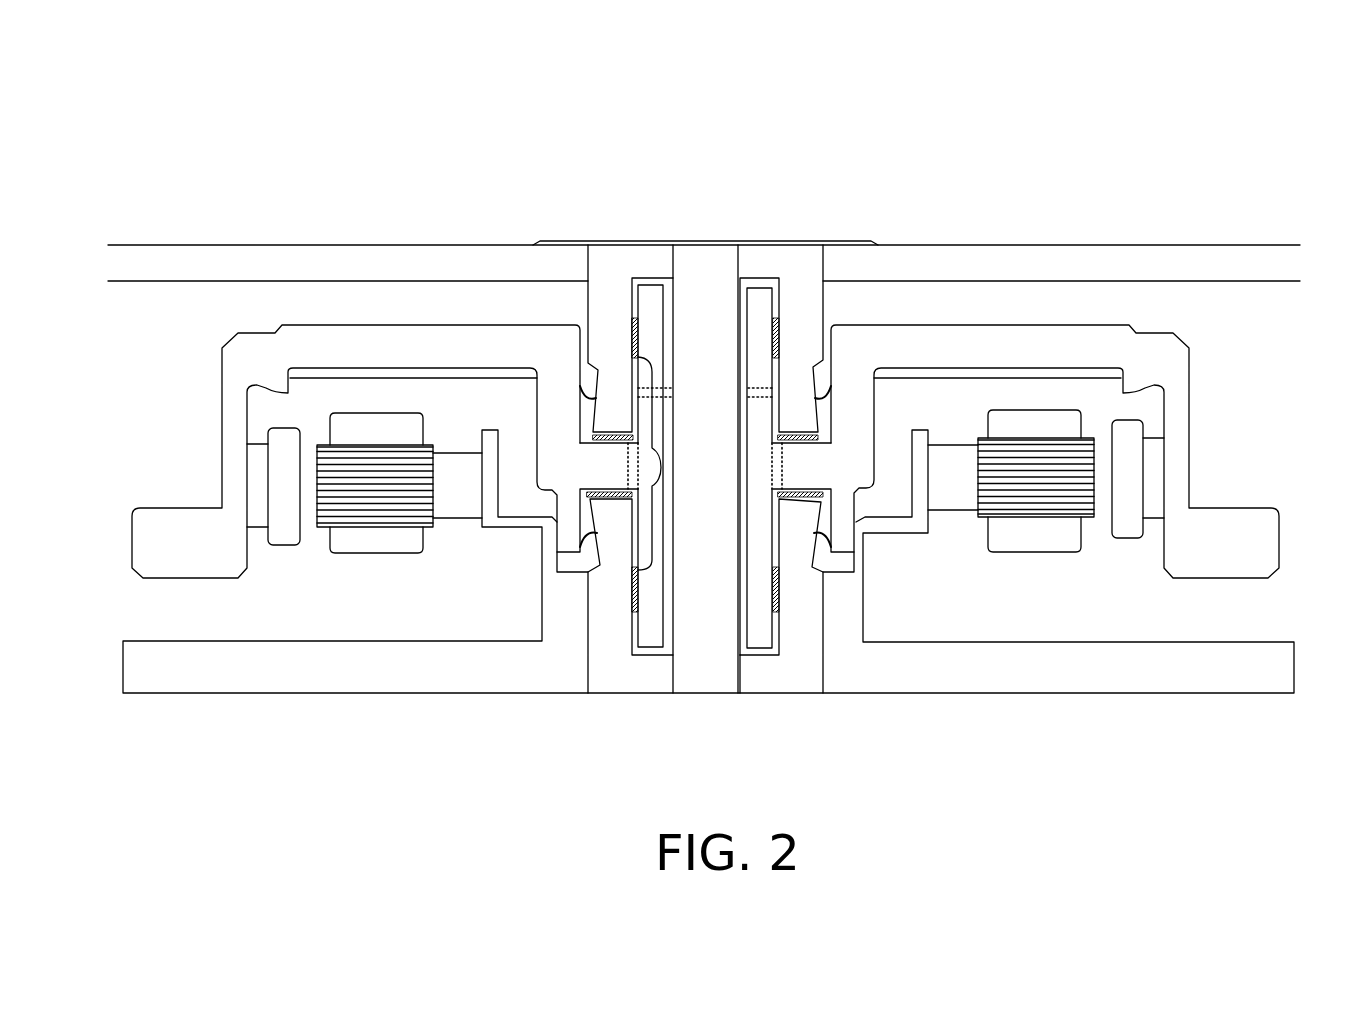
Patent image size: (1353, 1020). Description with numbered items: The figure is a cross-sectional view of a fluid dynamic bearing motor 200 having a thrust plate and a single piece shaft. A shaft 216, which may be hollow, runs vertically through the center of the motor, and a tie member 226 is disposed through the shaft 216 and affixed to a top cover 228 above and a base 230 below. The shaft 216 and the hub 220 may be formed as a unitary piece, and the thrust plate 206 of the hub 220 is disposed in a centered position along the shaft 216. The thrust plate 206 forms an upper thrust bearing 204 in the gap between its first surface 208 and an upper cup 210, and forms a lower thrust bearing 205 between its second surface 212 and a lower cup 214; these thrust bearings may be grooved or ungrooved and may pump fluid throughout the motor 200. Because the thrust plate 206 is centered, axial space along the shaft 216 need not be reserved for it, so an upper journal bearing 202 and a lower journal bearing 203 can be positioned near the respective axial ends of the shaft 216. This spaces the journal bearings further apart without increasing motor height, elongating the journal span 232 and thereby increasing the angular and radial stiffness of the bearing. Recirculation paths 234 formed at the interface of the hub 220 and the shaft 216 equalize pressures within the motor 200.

The fluid dynamic bearing motor 200 is at (174, 166).
The upper journal bearing 202 is at (630, 340).
The lower journal bearing 203 is at (632, 590).
The upper thrust bearing 204 is at (778, 432).
The lower thrust bearing 205 is at (775, 490).
The thrust plate 206 is at (823, 470).
The first surface 208 is at (815, 438).
The upper cup 210 is at (797, 288).
The second surface 212 is at (803, 496).
The lower cup 214 is at (762, 668).
The shaft 216 is at (653, 363).
The hub 220 is at (1125, 355).
The tie member 226 is at (717, 272).
The top cover 228 is at (533, 244).
The base 230 is at (1180, 693).
The journal span 232 is at (660, 465).
The recirculation paths 234 is at (628, 468).